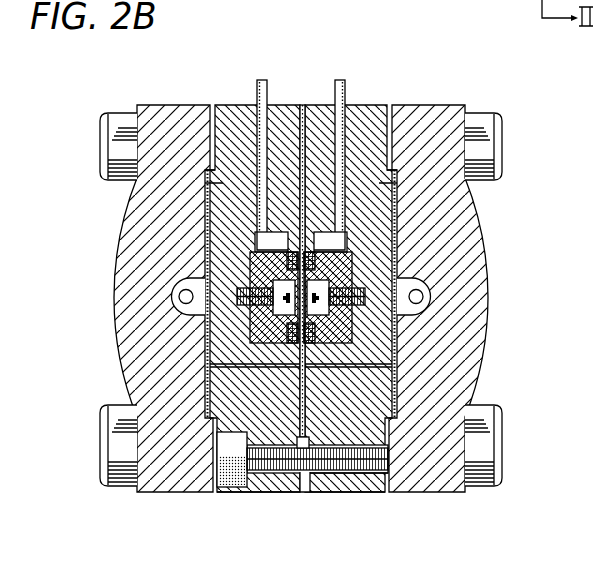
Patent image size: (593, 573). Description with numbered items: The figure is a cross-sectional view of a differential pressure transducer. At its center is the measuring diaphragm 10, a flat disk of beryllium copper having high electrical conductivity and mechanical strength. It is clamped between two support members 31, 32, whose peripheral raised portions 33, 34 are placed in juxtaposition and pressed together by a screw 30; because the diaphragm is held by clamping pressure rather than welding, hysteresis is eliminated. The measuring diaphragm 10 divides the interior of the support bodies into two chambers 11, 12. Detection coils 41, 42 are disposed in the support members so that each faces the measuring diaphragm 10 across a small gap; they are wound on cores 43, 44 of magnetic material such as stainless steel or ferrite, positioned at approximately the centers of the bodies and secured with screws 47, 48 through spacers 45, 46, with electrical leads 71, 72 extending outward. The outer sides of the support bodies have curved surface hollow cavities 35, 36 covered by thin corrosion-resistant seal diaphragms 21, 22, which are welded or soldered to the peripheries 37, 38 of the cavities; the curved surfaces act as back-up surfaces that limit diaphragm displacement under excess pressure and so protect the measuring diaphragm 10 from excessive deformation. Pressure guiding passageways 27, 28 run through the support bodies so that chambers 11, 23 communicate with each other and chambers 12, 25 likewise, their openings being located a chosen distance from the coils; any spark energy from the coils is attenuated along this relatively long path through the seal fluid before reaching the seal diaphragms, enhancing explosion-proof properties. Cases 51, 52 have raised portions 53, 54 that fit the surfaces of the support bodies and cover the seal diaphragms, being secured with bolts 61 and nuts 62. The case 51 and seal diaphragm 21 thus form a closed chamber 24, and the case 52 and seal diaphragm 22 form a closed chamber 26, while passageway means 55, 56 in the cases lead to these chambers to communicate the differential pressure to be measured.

The measuring diaphragm 10 is at (303, 105).
The chamber 11 is at (260, 485).
The chamber 12 is at (360, 491).
The seal diaphragm 21 is at (205, 212).
The seal diaphragm 22 is at (397, 215).
The chamber 23 is at (208, 370).
The chamber 24 is at (205, 383).
The chamber 25 is at (395, 366).
The chamber 26 is at (397, 383).
The pressure guiding passageway 27 is at (249, 368).
The pressure guiding passageway 28 is at (340, 368).
The screw 30 is at (220, 493).
The support member 31 is at (205, 183).
The support member 32 is at (398, 182).
The raised portion 33 is at (272, 486).
The raised portion 34 is at (312, 486).
The curved surface hollow cavity 35 is at (205, 200).
The curved surface hollow cavity 36 is at (397, 205).
The periphery 37 is at (207, 423).
The periphery 38 is at (398, 422).
The detection coil 41 is at (277, 243).
The detection coil 42 is at (325, 243).
The core 43 is at (254, 262).
The core 44 is at (350, 262).
The spacer 45 is at (245, 295).
The spacer 46 is at (357, 295).
The screw 47 is at (252, 334).
The screw 48 is at (350, 334).
The case 51 is at (162, 107).
The case 52 is at (447, 107).
The raised portion 53 is at (213, 168).
The raised portion 54 is at (394, 168).
The passageway means 55 is at (179, 297).
The passageway means 56 is at (423, 297).
The bolt 61 is at (113, 457).
The nut 62 is at (492, 458).
The electrical lead 71 is at (266, 83).
The electrical lead 72 is at (345, 84).